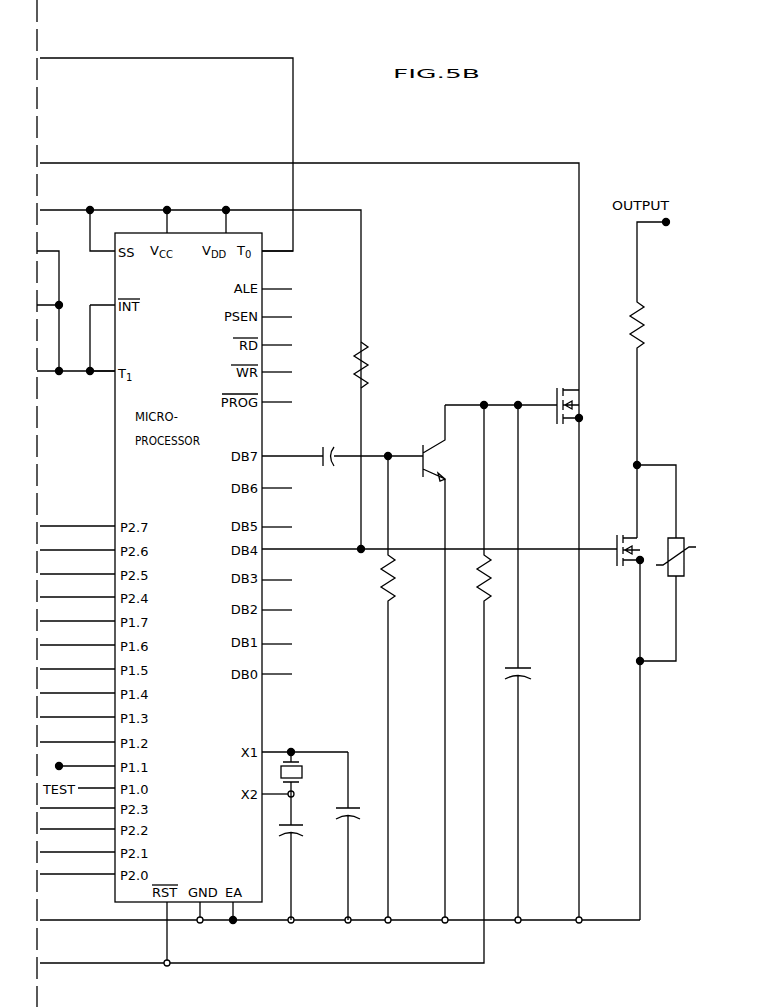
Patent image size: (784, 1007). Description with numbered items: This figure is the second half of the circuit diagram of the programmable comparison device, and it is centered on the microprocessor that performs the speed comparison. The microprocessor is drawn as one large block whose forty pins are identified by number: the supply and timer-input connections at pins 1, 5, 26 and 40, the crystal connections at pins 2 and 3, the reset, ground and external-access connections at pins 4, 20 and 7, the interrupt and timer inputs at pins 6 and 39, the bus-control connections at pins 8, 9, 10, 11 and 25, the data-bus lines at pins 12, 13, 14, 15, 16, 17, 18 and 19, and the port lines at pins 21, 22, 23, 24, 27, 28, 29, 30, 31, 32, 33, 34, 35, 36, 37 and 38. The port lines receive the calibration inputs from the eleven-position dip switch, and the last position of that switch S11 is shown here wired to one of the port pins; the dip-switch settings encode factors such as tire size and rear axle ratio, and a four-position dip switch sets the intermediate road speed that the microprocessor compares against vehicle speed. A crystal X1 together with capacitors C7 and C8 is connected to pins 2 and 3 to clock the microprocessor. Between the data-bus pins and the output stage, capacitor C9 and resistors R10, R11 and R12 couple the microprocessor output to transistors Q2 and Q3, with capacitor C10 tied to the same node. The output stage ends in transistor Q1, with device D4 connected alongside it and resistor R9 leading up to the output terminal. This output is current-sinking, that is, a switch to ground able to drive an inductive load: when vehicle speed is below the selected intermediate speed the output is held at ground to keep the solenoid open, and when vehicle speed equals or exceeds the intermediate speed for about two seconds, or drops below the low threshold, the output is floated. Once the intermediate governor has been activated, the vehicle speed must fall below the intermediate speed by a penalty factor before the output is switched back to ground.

The resistor R9 is at (636, 380).
The resistor R10 is at (373, 688).
The resistor R11 is at (265, 684).
The resistor R12 is at (378, 365).
The capacitor C7 is at (303, 857).
The capacitor C8 is at (360, 836).
The capacitor C9 is at (369, 446).
The capacitor C10 is at (535, 662).
The transistor Q1 is at (618, 727).
The transistor Q2 is at (427, 662).
The transistor Q3 is at (557, 641).
The diode D4 is at (666, 563).
The crystal X1 is at (305, 773).
The dip switch S11 is at (54, 759).
The microprocessor pin 1 (T0) 1 is at (277, 242).
The microprocessor pin 2 (X1) 2 is at (305, 742).
The microprocessor pin 3 (X2) 3 is at (276, 806).
The microprocessor pin 4 (RST) 4 is at (156, 932).
The microprocessor pin 5 (SS) 5 is at (102, 230).
The microprocessor pin 6 (INT) 6 is at (102, 329).
The microprocessor pin 7 (EA) 7 is at (232, 924).
The microprocessor pin 8 (RD) 8 is at (283, 345).
The microprocessor pin 9 (PSEN) 9 is at (283, 317).
The microprocessor pin 10 (WR) 10 is at (288, 372).
The microprocessor pin 11 (ALE) 11 is at (288, 289).
The microprocessor pin 12 (DB0) 12 is at (288, 674).
The microprocessor pin 13 (DB1) 13 is at (288, 644).
The microprocessor pin 14 (DB2) 14 is at (288, 610).
The microprocessor pin 15 (DB3) 15 is at (288, 580).
The microprocessor pin 16 (DB4) 16 is at (439, 560).
The microprocessor pin 17 (DB5) 17 is at (288, 527).
The microprocessor pin 18 (DB6) 18 is at (288, 488).
The microprocessor pin 19 (DB7) 19 is at (292, 447).
The microprocessor pin 20 (GND) 20 is at (199, 924).
The microprocessor pin 21 (P2.0) 21 is at (77, 867).
The microprocessor pin 22 (P2.1) 22 is at (77, 845).
The microprocessor pin 23 (P2.2) 23 is at (77, 822).
The microprocessor pin 24 (P2.3) 24 is at (77, 801).
The microprocessor pin 25 (PROG) 25 is at (288, 402).
The microprocessor pin 26 (VDD) 26 is at (237, 221).
The microprocessor pin 27 (P1.0) 27 is at (96, 781).
The microprocessor pin 28 (P1.1) 28 is at (87, 759).
The microprocessor pin 29 (P1.2) 29 is at (77, 735).
The microprocessor pin 30 (P1.3) 30 is at (77, 710).
The microprocessor pin 31 (P1.4) 31 is at (77, 686).
The microprocessor pin 32 (P1.5) 32 is at (77, 662).
The microprocessor pin 33 (P1.6) 33 is at (77, 638).
The microprocessor pin 34 (P1.7) 34 is at (77, 614).
The microprocessor pin 35 (P2.4) 35 is at (77, 590).
The microprocessor pin 36 (P2.5) 36 is at (77, 567).
The microprocessor pin 37 (P2.6) 37 is at (77, 543).
The microprocessor pin 38 (P2.7) 38 is at (77, 519).
The microprocessor pin 39 (T1) 39 is at (100, 384).
The microprocessor pin 40 (VCC) 40 is at (178, 221).